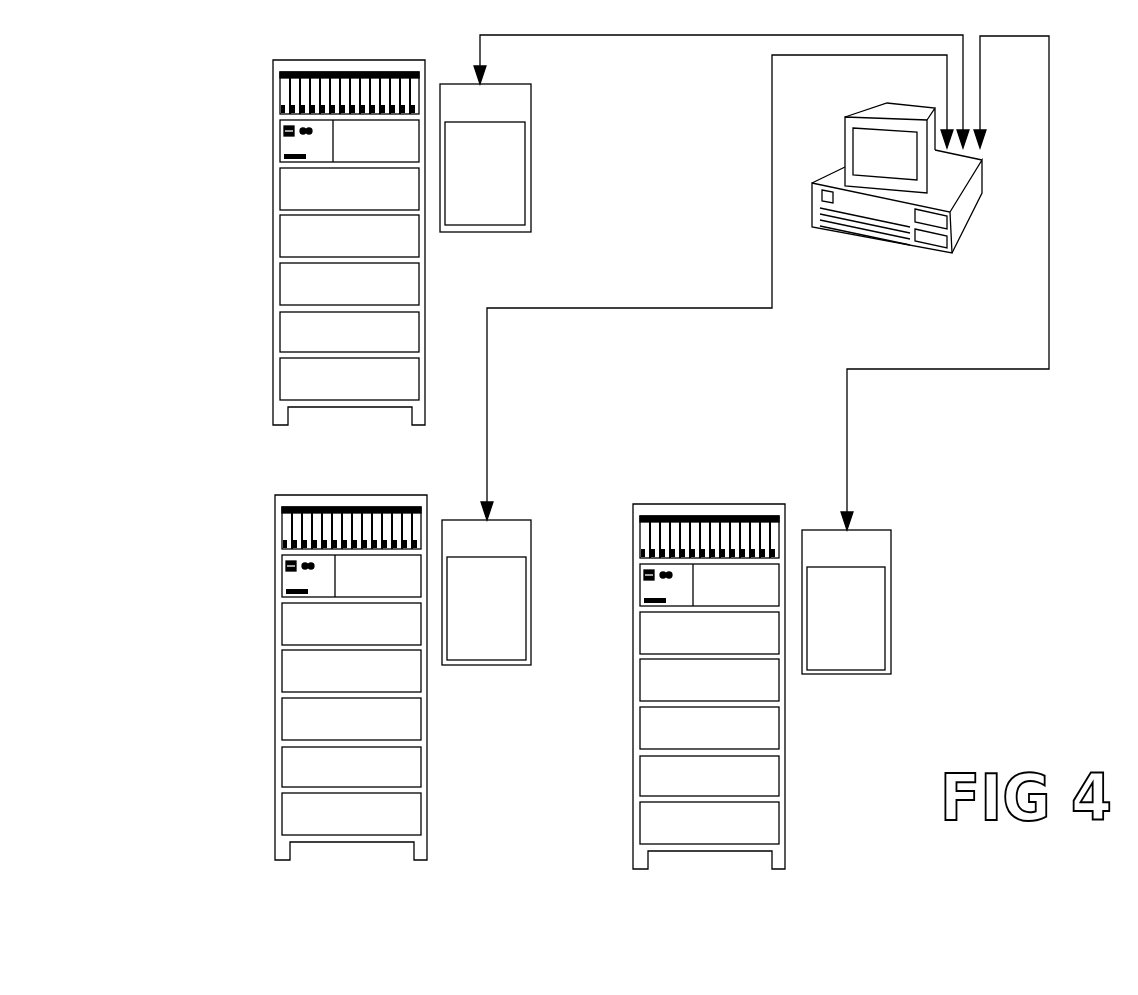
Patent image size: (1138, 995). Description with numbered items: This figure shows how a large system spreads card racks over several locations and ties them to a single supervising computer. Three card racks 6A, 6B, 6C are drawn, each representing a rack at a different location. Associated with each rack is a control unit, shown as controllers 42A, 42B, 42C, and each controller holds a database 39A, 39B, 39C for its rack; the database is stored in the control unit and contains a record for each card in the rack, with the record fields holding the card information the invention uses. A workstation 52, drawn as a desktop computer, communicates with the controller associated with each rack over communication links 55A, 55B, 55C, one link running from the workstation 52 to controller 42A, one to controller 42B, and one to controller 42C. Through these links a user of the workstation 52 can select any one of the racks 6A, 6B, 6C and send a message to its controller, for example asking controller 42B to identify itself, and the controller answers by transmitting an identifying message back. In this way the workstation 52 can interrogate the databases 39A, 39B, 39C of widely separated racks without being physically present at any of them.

The rack 6A is at (250, 266).
The rack 6B is at (252, 683).
The rack 6C is at (604, 786).
The controller 42A is at (510, 84).
The controller 42B is at (505, 520).
The controller 42C is at (891, 540).
The database 39A is at (497, 122).
The database 39B is at (513, 557).
The database 39C is at (885, 620).
The communication link 55A is at (480, 50).
The communication link 55B is at (772, 212).
The communication link 55C is at (847, 418).
The workstation 52 is at (968, 220).